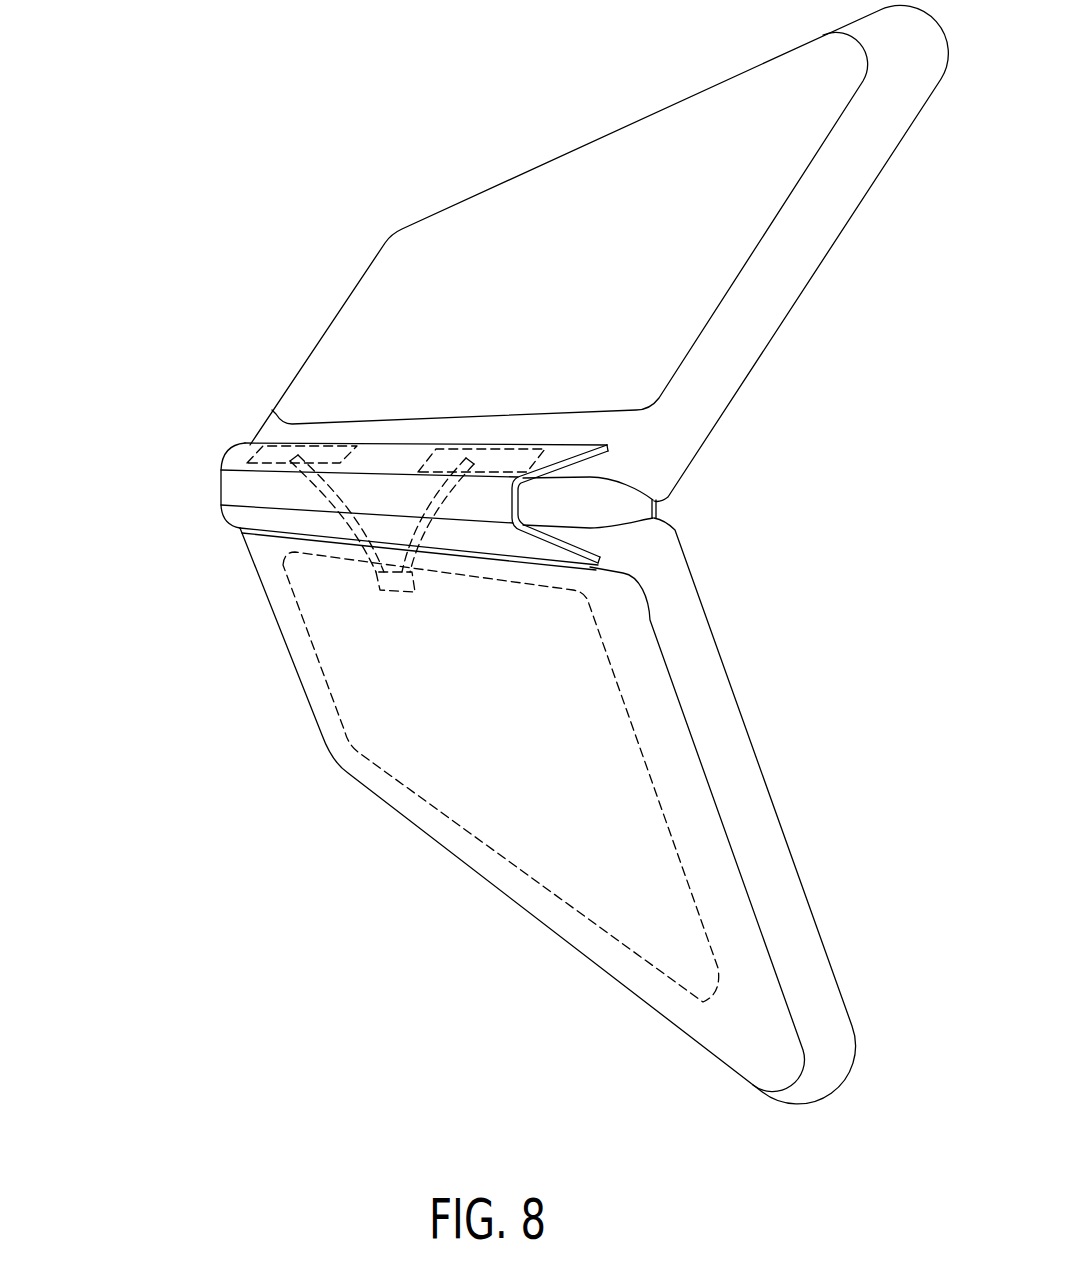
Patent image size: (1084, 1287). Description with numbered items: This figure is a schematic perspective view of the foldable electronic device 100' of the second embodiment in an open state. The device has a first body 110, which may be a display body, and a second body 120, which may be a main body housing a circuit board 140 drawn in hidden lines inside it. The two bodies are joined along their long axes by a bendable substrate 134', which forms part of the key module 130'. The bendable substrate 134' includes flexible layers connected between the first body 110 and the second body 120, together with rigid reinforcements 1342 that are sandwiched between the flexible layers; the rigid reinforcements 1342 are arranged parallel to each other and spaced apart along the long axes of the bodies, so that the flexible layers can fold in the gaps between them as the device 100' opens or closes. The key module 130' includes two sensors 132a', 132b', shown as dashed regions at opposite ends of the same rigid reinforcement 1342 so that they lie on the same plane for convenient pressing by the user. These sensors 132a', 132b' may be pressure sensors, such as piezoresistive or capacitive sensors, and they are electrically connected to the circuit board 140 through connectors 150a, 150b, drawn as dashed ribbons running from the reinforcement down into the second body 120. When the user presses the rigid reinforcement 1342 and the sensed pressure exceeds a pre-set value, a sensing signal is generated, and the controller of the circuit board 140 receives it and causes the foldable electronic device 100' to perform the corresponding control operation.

The foldable electronic device 100' is at (499, 592).
The first body 110 is at (832, 212).
The second body 120 is at (770, 858).
The key module 130' is at (431, 496).
The rigid reinforcement 1342 is at (240, 515).
The bendable substrate 134' is at (351, 506).
The sensor 132a' is at (261, 429).
The sensor 132b' is at (615, 447).
The circuit board 140 is at (528, 835).
The connector 150a is at (373, 537).
The connector 150b is at (410, 530).